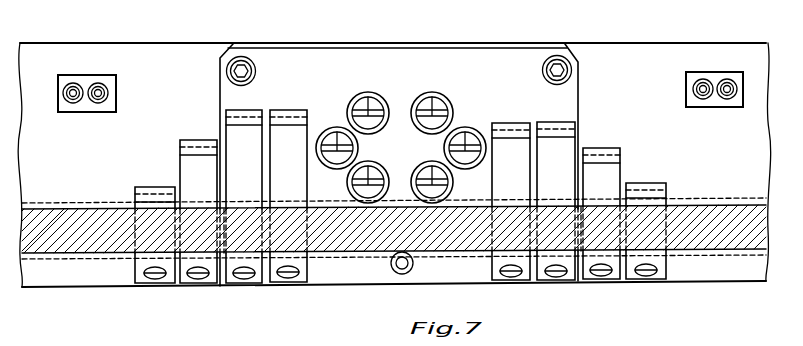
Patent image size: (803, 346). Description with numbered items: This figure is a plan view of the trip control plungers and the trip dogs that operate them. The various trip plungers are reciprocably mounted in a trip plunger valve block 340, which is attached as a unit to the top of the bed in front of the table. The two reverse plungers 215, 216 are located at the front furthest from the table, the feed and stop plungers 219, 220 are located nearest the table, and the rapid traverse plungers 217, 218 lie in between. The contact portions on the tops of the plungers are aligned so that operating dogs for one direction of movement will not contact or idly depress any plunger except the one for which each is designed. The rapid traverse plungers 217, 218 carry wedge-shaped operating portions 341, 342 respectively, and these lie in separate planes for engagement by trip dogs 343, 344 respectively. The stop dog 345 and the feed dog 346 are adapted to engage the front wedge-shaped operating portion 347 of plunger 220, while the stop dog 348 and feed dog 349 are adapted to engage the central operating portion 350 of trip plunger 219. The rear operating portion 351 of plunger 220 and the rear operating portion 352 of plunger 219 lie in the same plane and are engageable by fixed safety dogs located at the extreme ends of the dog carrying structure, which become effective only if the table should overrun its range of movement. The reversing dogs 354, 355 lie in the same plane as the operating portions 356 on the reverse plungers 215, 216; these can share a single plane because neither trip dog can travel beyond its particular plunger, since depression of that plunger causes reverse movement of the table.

The reverse plunger 215 is at (345, 184).
The reverse plunger 216 is at (456, 188).
The rapid traverse plunger 217 is at (335, 150).
The rapid traverse plunger 218 is at (484, 139).
The feed and stop plunger 219 is at (381, 78).
The feed and stop plunger 220 is at (445, 76).
The trip plunger valve block 340 is at (534, 55).
The wedge-shaped operating portion 341 is at (333, 134).
The wedge-shaped operating portion 342 is at (475, 165).
The trip dog 343 is at (182, 140).
The trip dog 344 is at (604, 149).
The stop dog 345 is at (556, 122).
The feed dog 346 is at (523, 121).
The front wedge-shaped operating portion 347 is at (484, 139).
The stop dog 348 is at (247, 107).
The feed dog 349 is at (285, 115).
The central operating portion 350 is at (373, 110).
The rear operating portion 351 is at (438, 100).
The rear operating portion 352 is at (381, 97).
The reversing dog 354 is at (157, 174).
The reversing dog 355 is at (655, 184).
The operating portion 356 is at (408, 238).